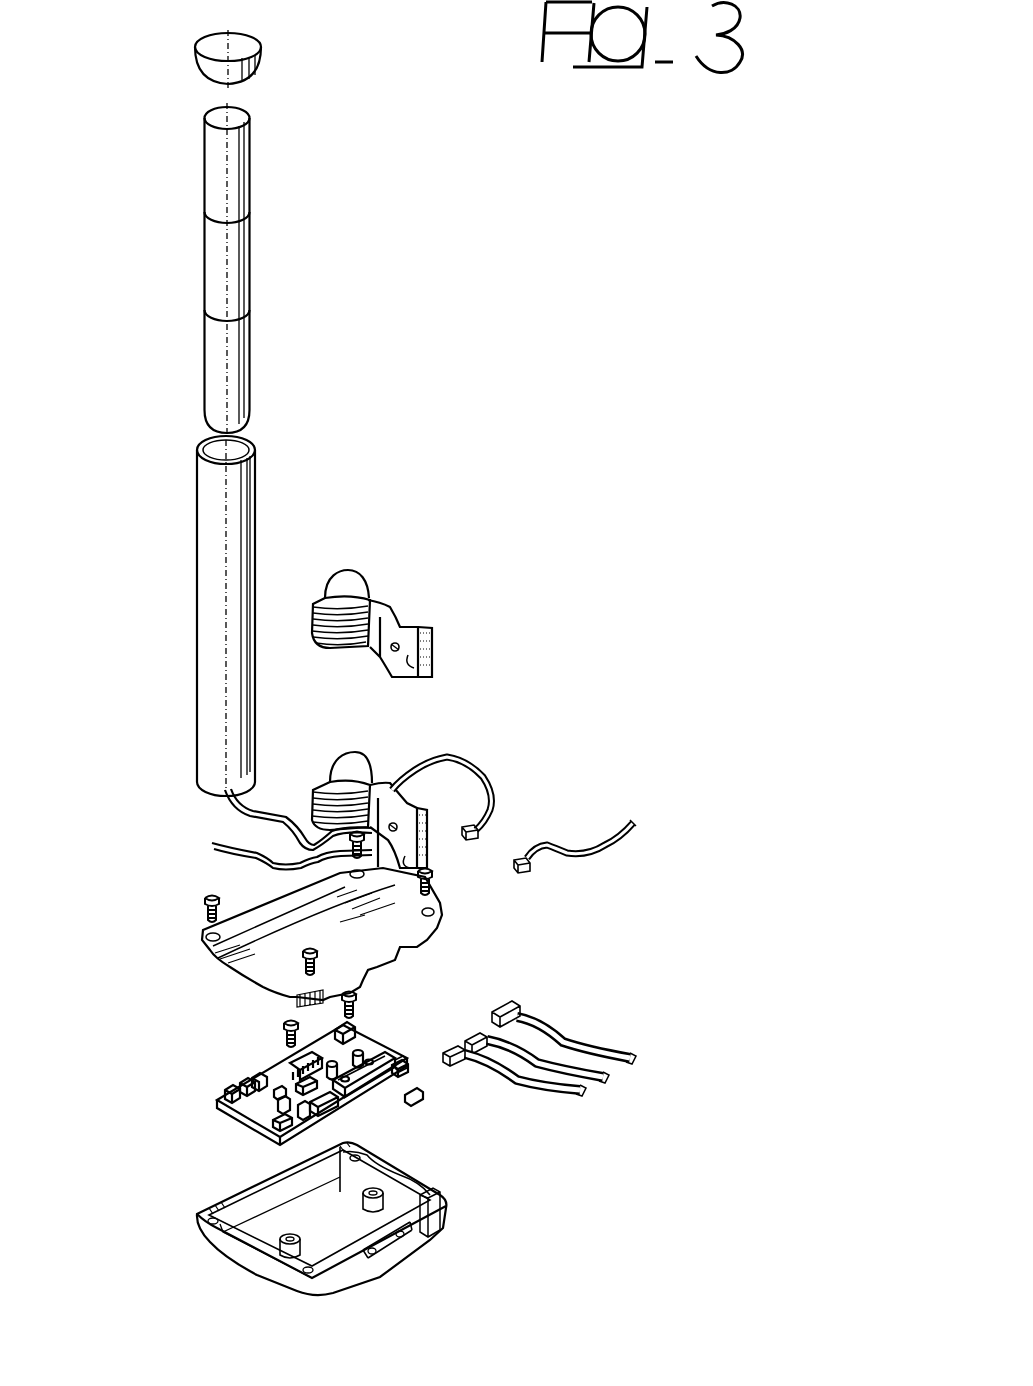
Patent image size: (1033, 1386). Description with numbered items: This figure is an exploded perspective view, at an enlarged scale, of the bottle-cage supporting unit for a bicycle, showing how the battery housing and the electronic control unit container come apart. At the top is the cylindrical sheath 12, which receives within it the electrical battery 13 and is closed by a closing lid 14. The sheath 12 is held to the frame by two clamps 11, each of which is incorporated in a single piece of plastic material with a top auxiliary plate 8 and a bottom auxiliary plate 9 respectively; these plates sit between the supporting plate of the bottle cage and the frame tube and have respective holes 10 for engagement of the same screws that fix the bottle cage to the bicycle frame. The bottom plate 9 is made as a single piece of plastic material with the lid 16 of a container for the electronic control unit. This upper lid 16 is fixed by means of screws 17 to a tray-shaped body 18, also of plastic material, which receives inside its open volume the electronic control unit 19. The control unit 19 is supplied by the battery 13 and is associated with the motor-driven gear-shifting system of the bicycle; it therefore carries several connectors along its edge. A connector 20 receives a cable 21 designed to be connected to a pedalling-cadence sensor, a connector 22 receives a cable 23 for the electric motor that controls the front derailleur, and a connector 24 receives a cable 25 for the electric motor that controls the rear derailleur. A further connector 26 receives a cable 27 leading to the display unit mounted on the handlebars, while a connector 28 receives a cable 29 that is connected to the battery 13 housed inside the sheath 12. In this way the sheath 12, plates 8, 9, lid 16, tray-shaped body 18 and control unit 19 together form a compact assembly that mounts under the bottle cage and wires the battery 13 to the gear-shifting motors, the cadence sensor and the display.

The top auxiliary plate 8 is at (432, 670).
The bottom auxiliary plate 9 is at (440, 855).
The holes 10 is at (397, 643).
The clamps 11 is at (350, 585).
The cylindrical sheath 12 is at (240, 487).
The battery 13 is at (246, 168).
The closing lid 14 is at (262, 76).
The lid 16 is at (247, 957).
The screws 17 is at (305, 948).
The tray-shaped body 18 is at (440, 1250).
The electronic control unit 19 is at (280, 1088).
The connector 20 is at (343, 1117).
The cable 21 is at (557, 1097).
The connector 22 is at (412, 1106).
The cable 23 is at (593, 1082).
The connector 24 is at (400, 1077).
The cable 25 is at (553, 1028).
The connector 26 is at (400, 1050).
The cable 27 is at (622, 840).
The connector 28 is at (358, 1022).
The cable 29 is at (483, 771).